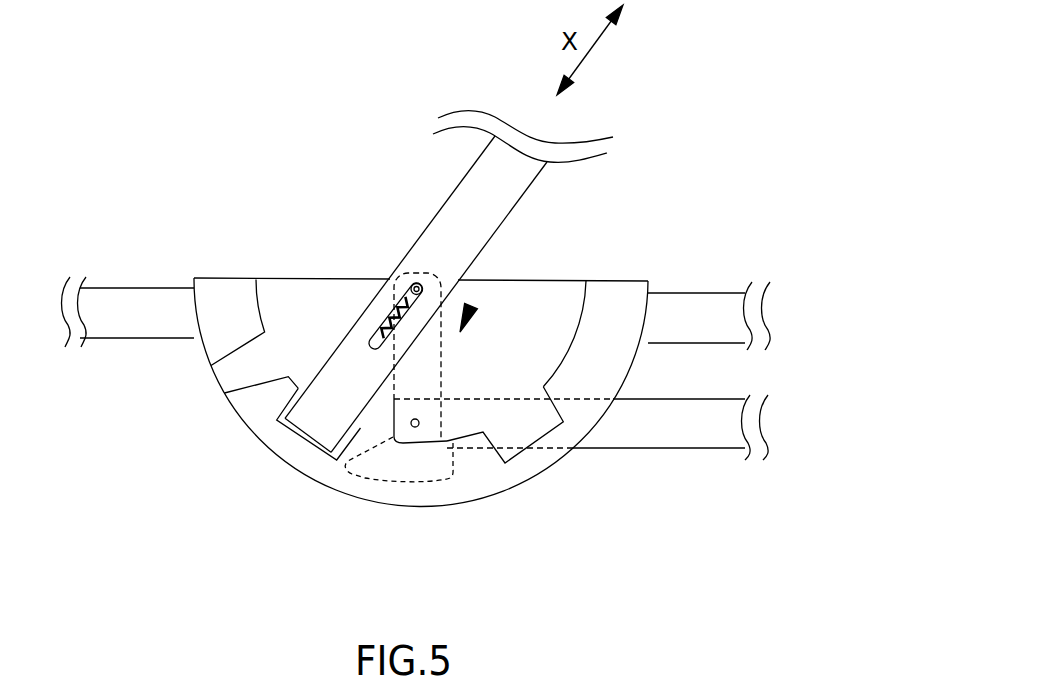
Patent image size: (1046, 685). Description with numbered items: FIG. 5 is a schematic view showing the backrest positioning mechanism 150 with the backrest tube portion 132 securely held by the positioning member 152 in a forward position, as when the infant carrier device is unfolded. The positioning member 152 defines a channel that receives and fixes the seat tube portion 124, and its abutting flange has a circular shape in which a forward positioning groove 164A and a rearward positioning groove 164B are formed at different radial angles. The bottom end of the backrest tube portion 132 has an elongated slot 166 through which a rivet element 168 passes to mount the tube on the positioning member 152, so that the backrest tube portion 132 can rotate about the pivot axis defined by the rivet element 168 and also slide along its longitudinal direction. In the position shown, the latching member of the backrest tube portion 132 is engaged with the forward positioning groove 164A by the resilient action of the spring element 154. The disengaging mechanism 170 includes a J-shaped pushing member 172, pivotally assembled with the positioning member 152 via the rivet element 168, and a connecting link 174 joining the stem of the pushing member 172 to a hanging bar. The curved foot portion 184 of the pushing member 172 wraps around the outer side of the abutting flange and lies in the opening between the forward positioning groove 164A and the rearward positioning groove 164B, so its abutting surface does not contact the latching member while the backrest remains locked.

The seat tube portion 124 is at (140, 307).
The backrest tube portion 132 is at (513, 193).
The backrest positioning mechanism 150 is at (491, 318).
The positioning member 152 is at (607, 362).
The spring element 154 is at (374, 324).
The forward positioning groove 164A is at (320, 453).
The rearward positioning groove 164B is at (527, 452).
The elongated slot 166 is at (393, 277).
The rivet element 168 is at (413, 281).
The disengaging mechanism 170 is at (471, 306).
The pushing member 172 is at (442, 345).
The connecting link 174 is at (718, 433).
The foot portion 184 is at (417, 475).